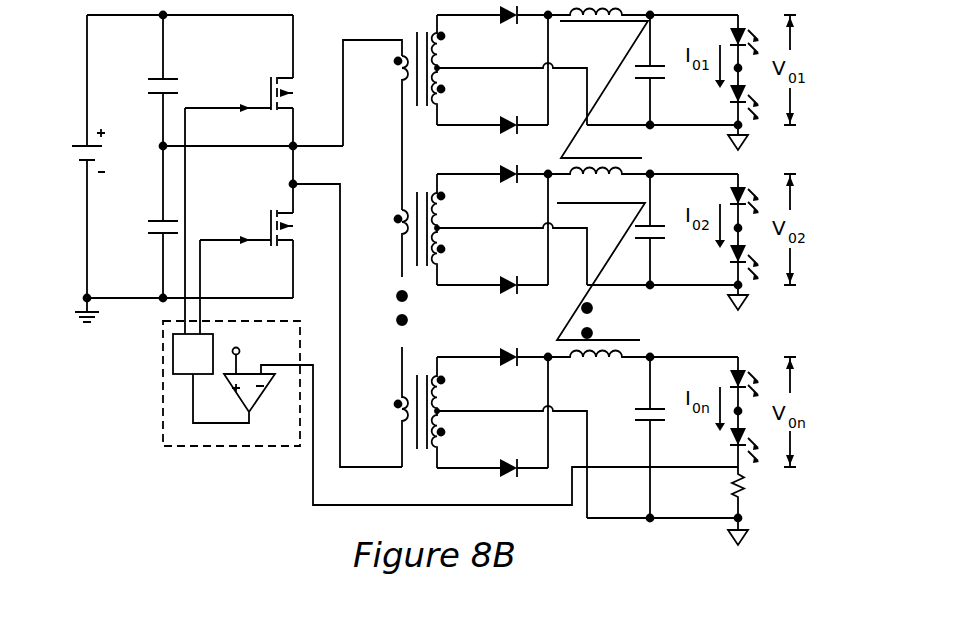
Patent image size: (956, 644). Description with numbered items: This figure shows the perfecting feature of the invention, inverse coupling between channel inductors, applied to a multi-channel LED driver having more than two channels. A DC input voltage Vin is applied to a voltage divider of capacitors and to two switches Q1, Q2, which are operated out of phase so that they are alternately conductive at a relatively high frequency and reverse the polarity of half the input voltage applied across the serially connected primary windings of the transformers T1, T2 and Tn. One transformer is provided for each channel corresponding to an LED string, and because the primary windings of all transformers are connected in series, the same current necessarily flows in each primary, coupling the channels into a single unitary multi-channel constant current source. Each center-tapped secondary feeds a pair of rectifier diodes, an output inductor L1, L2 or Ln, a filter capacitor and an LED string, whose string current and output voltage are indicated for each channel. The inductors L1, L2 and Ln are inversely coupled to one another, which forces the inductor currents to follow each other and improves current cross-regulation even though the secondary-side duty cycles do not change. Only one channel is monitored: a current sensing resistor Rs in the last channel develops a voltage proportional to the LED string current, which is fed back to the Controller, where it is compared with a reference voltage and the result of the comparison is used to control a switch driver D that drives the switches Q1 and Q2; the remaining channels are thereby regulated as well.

The input voltage Vin is at (71, 150).
The switch Q1 is at (239, 114).
The switch Q2 is at (246, 253).
The switch driver D is at (193, 354).
The control circuit Controller is at (450, 413).
The transformer T1 is at (491, 107).
The transformer T2 is at (491, 229).
The transformer Tn is at (491, 432).
The inductor L1 is at (643, 26).
The inductor L2 is at (643, 185).
The inductor Ln is at (643, 369).
The current sensing resistor Rs is at (754, 492).